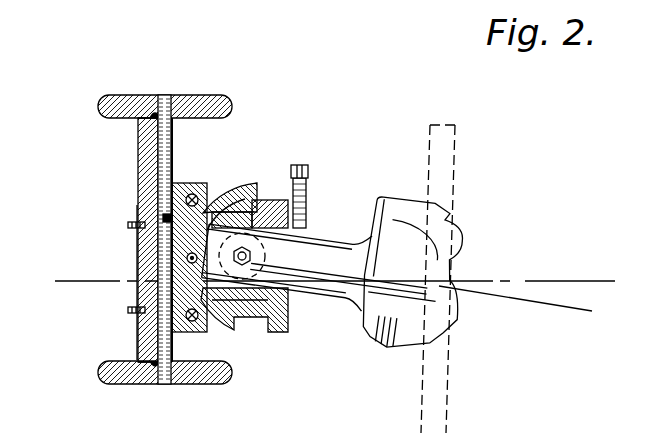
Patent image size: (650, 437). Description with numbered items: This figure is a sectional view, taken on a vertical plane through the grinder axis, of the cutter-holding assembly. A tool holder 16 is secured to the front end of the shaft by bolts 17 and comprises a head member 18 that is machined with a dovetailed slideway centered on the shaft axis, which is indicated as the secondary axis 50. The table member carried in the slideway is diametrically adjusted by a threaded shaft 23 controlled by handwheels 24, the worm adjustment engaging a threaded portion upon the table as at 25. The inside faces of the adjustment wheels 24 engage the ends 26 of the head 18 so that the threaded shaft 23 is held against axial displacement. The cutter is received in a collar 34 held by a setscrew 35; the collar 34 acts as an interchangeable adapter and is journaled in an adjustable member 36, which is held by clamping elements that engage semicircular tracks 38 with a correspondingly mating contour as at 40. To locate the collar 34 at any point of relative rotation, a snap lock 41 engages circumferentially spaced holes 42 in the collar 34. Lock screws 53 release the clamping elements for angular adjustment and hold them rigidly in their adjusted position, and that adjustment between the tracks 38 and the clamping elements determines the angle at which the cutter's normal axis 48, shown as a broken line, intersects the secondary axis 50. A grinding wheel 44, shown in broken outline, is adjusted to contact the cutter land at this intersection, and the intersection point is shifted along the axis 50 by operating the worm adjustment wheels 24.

The tool holder 16 is at (128, 197).
The bolts 17 is at (128, 225).
The head member 18 is at (143, 172).
The threaded shaft 23 is at (166, 97).
The handwheels 24 is at (233, 106).
The threaded portion upon the table 25 is at (176, 186).
The ends of the head 26 is at (142, 129).
The collar 34 is at (308, 213).
The setscrew 35 is at (308, 172).
The adjustable member 36 is at (268, 188).
The semicircular tracks 38 is at (218, 333).
The mating contour 40 is at (163, 218).
The snap lock 41 is at (254, 256).
The circumferentially spaced holes 42 is at (236, 187).
The grinding wheel 44 is at (440, 396).
The normal axis of rotation of the cutter 48 is at (553, 310).
The secondary axis 50 is at (75, 280).
The lock screws 53 is at (186, 258).